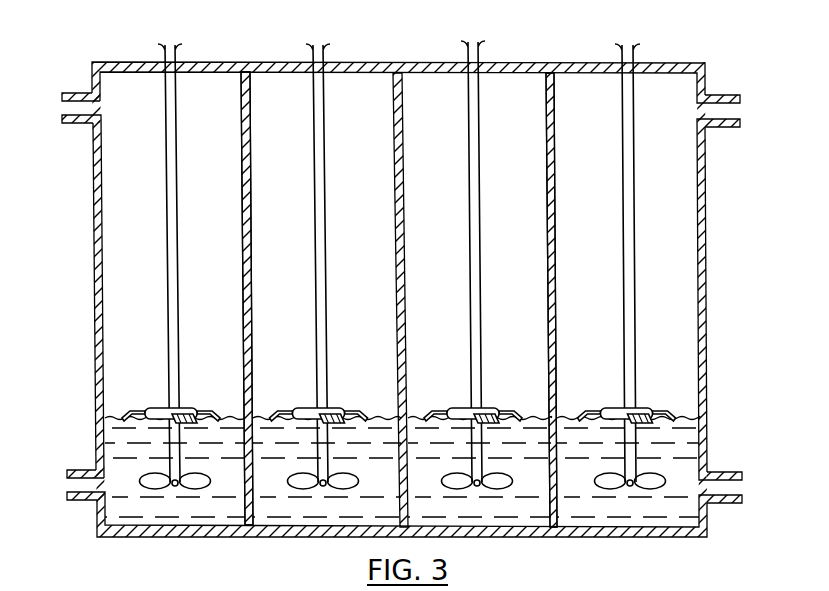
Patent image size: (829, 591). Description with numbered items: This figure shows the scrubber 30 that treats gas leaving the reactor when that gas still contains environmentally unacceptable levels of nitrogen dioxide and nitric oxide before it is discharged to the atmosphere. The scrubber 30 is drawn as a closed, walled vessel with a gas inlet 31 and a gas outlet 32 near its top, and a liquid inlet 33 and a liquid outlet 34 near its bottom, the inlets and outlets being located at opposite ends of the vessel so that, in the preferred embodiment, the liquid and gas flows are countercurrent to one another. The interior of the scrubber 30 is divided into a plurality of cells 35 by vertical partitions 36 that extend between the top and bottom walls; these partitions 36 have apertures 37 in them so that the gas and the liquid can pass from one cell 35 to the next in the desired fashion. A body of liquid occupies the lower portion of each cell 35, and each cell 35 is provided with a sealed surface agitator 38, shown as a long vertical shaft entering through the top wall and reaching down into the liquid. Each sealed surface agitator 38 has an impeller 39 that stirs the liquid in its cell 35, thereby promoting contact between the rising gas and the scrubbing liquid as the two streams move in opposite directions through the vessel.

The scrubber 30 is at (677, 62).
The gas inlet 31 is at (721, 95).
The gas outlet 32 is at (78, 93).
The liquid inlet 33 is at (78, 470).
The liquid outlet 34 is at (730, 472).
The cells 35 is at (510, 90).
The partitions 36 is at (556, 108).
The apertures 37 is at (554, 200).
The sealed surface agitator 38 is at (174, 206).
The impeller 39 is at (182, 406).